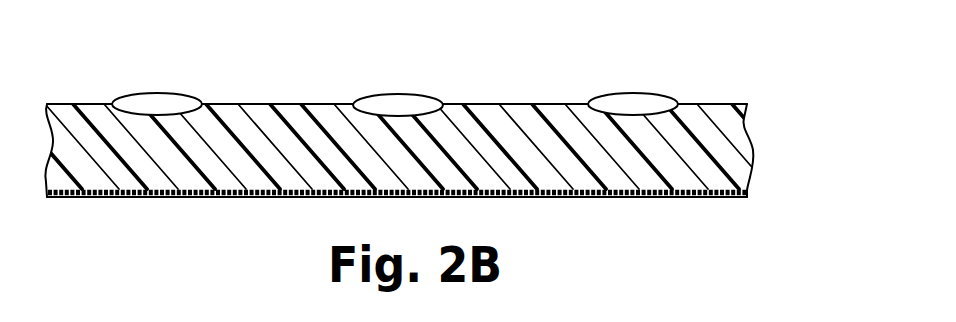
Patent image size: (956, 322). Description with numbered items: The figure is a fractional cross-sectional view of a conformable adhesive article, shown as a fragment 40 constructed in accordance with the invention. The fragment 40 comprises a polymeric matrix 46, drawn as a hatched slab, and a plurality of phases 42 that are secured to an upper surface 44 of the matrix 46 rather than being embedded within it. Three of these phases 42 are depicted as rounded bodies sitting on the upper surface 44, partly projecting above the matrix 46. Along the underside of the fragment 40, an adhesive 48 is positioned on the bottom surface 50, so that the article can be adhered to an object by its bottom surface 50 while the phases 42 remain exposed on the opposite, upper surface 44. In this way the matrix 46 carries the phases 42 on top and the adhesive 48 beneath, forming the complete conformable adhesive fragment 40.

The fragment 40 is at (407, 133).
The phases 42 is at (157, 99).
The upper surface 44 is at (484, 103).
The matrix 46 is at (292, 137).
The adhesive 48 is at (142, 198).
The bottom surface 50 is at (570, 198).